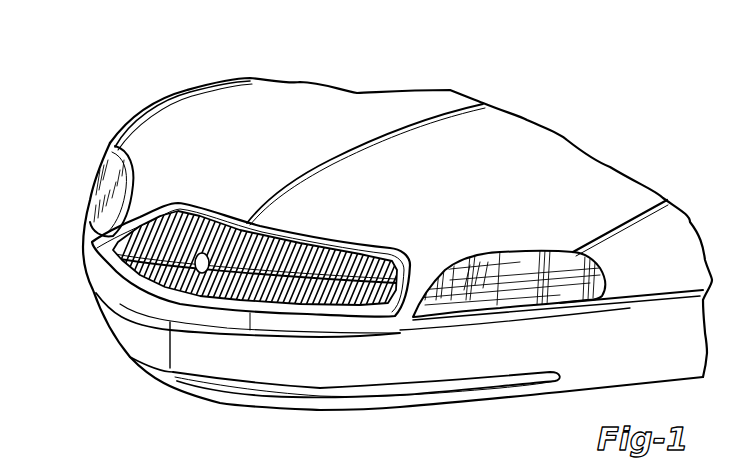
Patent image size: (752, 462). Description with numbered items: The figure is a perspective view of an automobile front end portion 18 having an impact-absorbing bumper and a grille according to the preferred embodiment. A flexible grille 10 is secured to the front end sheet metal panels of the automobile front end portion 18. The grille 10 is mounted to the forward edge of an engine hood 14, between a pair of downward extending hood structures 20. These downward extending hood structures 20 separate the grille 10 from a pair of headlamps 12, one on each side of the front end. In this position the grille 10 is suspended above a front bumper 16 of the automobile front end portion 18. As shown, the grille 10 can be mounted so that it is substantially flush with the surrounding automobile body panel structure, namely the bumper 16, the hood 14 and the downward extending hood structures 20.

The flexible grille 10 is at (287, 320).
The headlamps 12 is at (105, 172).
The engine hood 14 is at (232, 118).
The front bumper 16 is at (137, 340).
The automobile front end portion 18 is at (112, 103).
The downward extending hood structures 20 is at (418, 290).